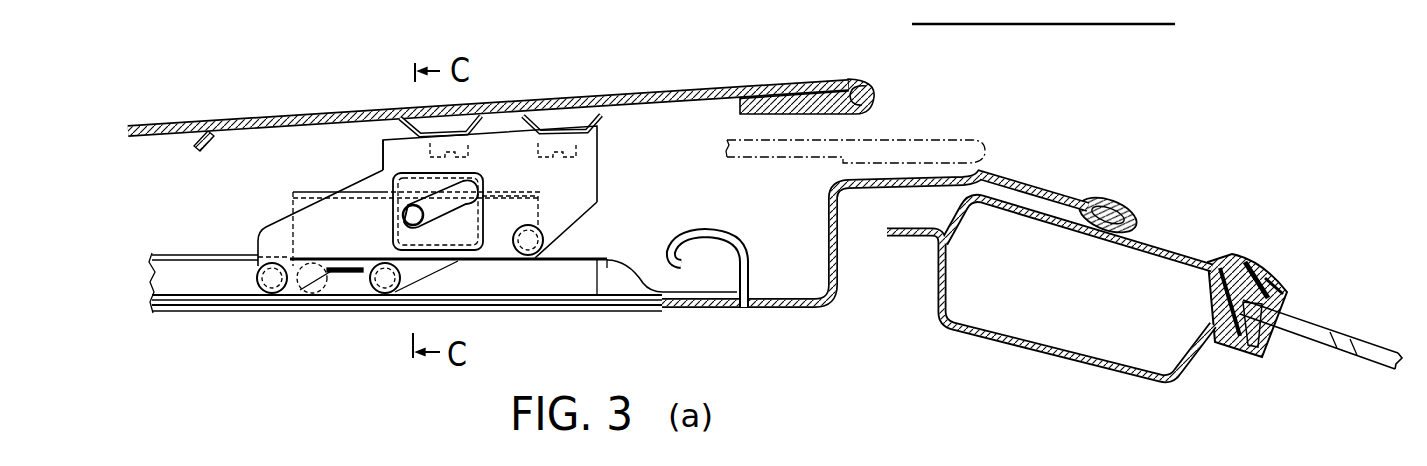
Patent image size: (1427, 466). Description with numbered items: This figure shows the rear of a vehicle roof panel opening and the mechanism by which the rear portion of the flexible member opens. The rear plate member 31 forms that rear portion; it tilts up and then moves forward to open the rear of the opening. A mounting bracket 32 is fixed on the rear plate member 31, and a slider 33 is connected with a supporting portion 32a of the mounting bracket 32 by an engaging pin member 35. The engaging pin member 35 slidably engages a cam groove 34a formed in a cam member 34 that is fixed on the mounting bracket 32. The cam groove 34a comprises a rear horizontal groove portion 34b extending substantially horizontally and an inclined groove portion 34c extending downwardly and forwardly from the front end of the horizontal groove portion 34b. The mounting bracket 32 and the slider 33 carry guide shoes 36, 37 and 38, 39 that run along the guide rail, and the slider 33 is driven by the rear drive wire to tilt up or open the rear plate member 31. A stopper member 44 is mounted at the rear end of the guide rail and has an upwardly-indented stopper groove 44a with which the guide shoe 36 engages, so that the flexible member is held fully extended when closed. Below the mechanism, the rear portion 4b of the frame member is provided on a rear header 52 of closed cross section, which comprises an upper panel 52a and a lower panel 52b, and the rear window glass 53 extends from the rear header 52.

The rear plate member 31 is at (232, 131).
The mounting bracket 32 is at (597, 156).
The supporting portion 32a is at (597, 203).
The slider 33 is at (293, 193).
The cam member 34 is at (484, 174).
The cam groove 34a is at (463, 203).
The rear horizontal groove portion 34b is at (486, 190).
The inclined groove portion 34c is at (382, 172).
The engaging pin member 35 is at (404, 212).
The guide shoe 36 is at (543, 235).
The guide shoe 37 is at (242, 294).
The guide shoe 38 is at (396, 306).
The guide shoe 39 is at (328, 304).
The stopper member 44 is at (750, 280).
The stopper groove 44a is at (707, 257).
The rear portion of the frame member 4b is at (1024, 180).
The rear header 52 is at (1185, 381).
The upper panel 52a is at (1179, 252).
The lower panel 52b is at (1037, 352).
The rear window glass 53 is at (1323, 327).